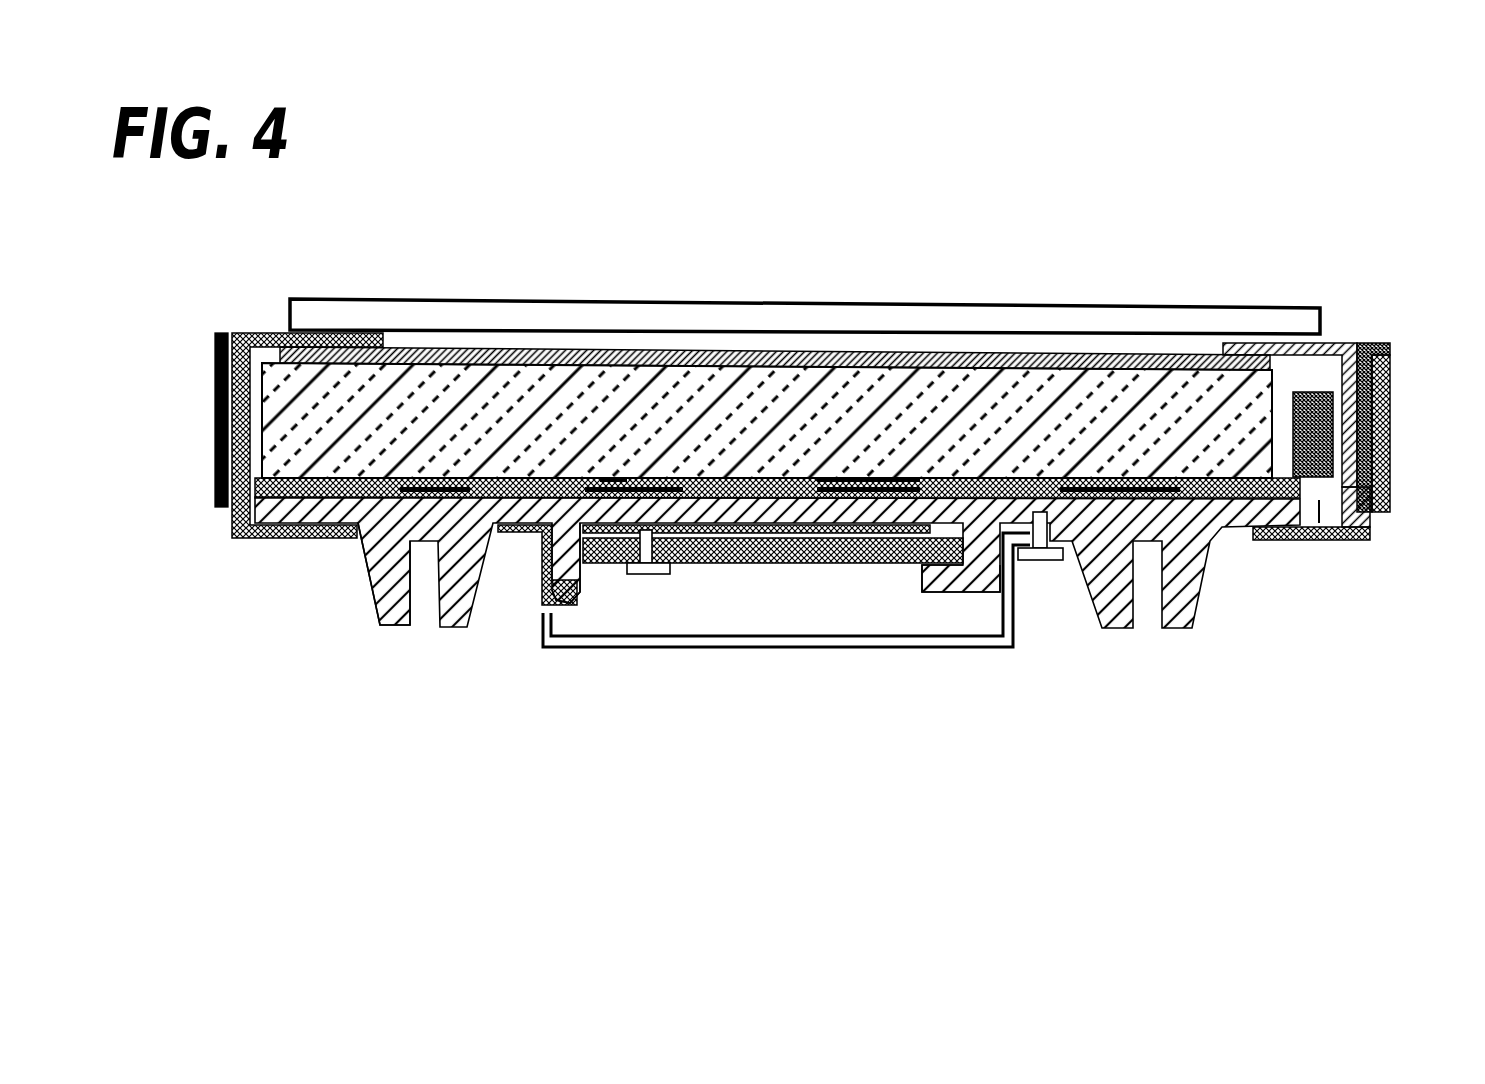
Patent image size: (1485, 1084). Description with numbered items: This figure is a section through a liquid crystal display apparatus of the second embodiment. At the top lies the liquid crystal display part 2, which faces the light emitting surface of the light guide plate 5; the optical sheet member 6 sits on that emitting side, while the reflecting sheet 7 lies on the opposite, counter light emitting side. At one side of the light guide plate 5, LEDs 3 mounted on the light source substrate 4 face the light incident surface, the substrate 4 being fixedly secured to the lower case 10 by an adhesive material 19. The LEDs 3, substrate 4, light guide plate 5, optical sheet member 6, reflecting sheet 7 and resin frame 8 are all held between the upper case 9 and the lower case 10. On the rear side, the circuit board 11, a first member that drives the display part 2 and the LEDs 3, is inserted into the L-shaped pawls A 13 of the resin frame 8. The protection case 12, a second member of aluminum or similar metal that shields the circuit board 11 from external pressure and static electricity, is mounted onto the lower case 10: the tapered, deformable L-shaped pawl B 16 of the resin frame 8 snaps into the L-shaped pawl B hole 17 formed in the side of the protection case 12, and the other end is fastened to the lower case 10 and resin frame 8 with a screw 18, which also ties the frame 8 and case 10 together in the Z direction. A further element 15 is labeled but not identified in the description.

The liquid crystal display part 2 is at (1160, 307).
The LED 3 is at (1330, 343).
The light source substrate 4 is at (1340, 545).
The light guide plate 5 is at (975, 408).
The optical sheet member 6 is at (1065, 358).
The reflecting sheet 7 is at (1313, 543).
The resin frame 8 is at (1232, 530).
The upper case 9 is at (1392, 395).
The lower case 10 is at (1360, 545).
The circuit board 11 is at (785, 567).
The protection case 12 is at (913, 650).
The L-shaped pawl A 13 is at (957, 592).
The leg 15 is at (376, 600).
The L-shaped pawl B 16 is at (577, 600).
The L-shaped pawl B hole 17 is at (542, 607).
The screw 18 is at (650, 585).
The adhesive material 19 is at (1362, 344).